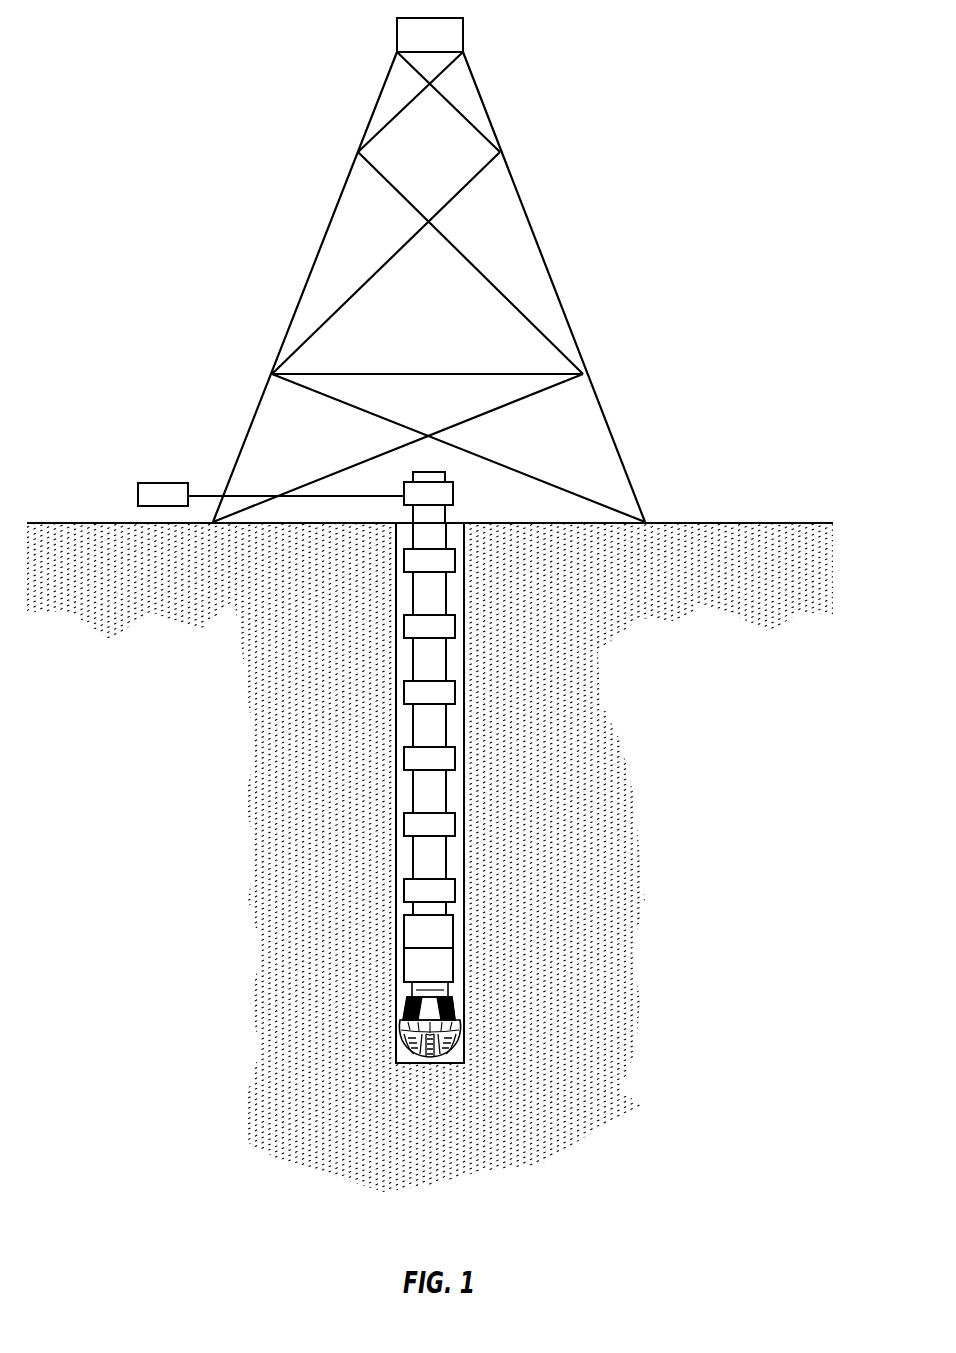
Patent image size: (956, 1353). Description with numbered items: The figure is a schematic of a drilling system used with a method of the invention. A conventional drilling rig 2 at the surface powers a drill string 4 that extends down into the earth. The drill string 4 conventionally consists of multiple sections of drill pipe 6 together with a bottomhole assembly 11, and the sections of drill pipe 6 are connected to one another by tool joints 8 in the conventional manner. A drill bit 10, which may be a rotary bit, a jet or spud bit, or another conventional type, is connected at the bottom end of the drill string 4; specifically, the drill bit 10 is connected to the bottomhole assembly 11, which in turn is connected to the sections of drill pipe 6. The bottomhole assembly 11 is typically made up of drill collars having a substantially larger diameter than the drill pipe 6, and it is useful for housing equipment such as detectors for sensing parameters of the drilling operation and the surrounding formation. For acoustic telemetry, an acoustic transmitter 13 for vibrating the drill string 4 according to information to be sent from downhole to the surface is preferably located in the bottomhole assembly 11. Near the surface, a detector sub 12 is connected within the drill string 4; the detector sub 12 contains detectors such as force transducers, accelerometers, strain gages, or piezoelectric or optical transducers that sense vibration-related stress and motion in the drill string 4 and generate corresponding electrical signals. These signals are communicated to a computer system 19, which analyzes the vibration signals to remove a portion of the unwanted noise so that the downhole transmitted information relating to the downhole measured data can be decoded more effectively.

The drilling rig 2 is at (527, 208).
The drill string 4 is at (565, 796).
The drill pipe 6 is at (413, 728).
The tool joints 8 is at (404, 560).
The drill bit 10 is at (402, 1035).
The bottomhole assembly 11 is at (435, 949).
The detector sub 12 is at (453, 489).
The acoustic transmitter 13 is at (413, 960).
The computer system 19 is at (163, 483).